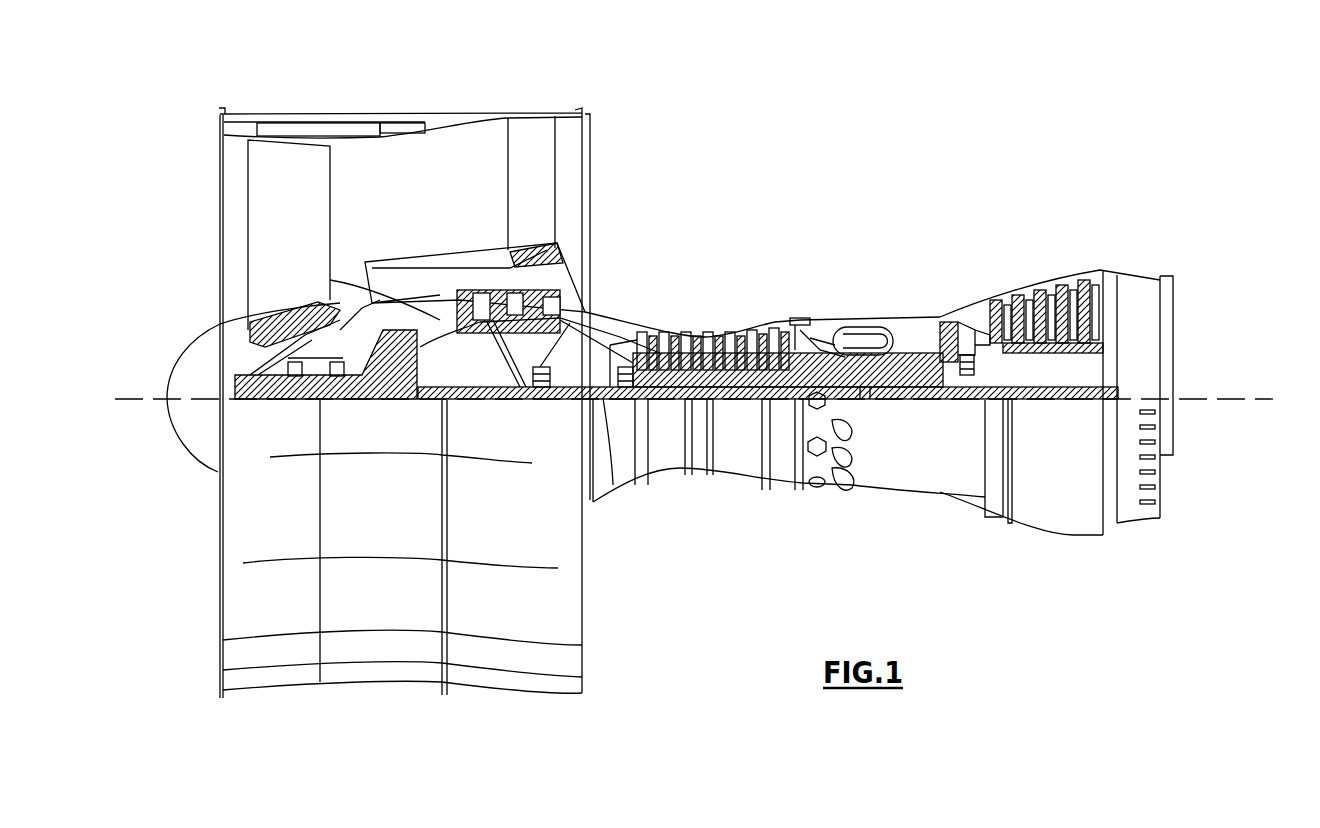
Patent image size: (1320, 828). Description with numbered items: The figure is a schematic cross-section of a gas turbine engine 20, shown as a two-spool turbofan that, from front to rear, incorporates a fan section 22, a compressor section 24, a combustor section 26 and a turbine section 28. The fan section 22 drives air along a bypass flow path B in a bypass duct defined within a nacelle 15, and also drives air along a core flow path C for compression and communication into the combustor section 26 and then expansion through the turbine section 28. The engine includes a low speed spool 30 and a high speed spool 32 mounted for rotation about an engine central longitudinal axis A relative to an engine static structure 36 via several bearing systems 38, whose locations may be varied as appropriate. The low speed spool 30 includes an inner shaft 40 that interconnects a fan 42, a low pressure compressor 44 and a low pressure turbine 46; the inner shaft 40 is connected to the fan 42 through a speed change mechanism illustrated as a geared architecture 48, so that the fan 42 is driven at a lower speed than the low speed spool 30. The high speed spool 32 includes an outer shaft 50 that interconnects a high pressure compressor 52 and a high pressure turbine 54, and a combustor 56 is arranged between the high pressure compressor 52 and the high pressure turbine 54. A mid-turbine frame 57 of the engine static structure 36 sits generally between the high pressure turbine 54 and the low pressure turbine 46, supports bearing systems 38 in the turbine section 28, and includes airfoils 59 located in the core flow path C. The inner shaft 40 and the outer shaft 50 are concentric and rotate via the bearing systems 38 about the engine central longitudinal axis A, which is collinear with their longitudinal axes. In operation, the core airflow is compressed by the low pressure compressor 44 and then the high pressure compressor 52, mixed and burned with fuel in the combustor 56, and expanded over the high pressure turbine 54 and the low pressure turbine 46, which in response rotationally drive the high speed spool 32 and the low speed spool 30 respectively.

The nacelle 15 is at (400, 116).
The gas turbine engine 20 is at (862, 164).
The fan section 22 is at (330, 104).
The compressor section 24 is at (633, 304).
The combustor section 26 is at (854, 296).
The turbine section 28 is at (1005, 256).
The low speed spool 30 is at (740, 404).
The high speed spool 32 is at (783, 340).
The engine static structure 36 is at (780, 492).
The bearing systems 38 is at (537, 400).
The inner shaft 40 is at (610, 490).
The fan 42 is at (303, 244).
The low pressure compressor 44 is at (505, 305).
The low pressure turbine 46 is at (1048, 282).
The geared architecture 48 is at (405, 400).
The outer shaft 50 is at (866, 400).
The high pressure compressor 52 is at (710, 335).
The high pressure turbine 54 is at (923, 330).
The combustor 56 is at (855, 335).
The mid-turbine frame 57 is at (964, 313).
The airfoils 59 is at (995, 360).
The engine central longitudinal axis A is at (1258, 399).
The bypass flow path B is at (358, 190).
The core flow path C is at (400, 295).